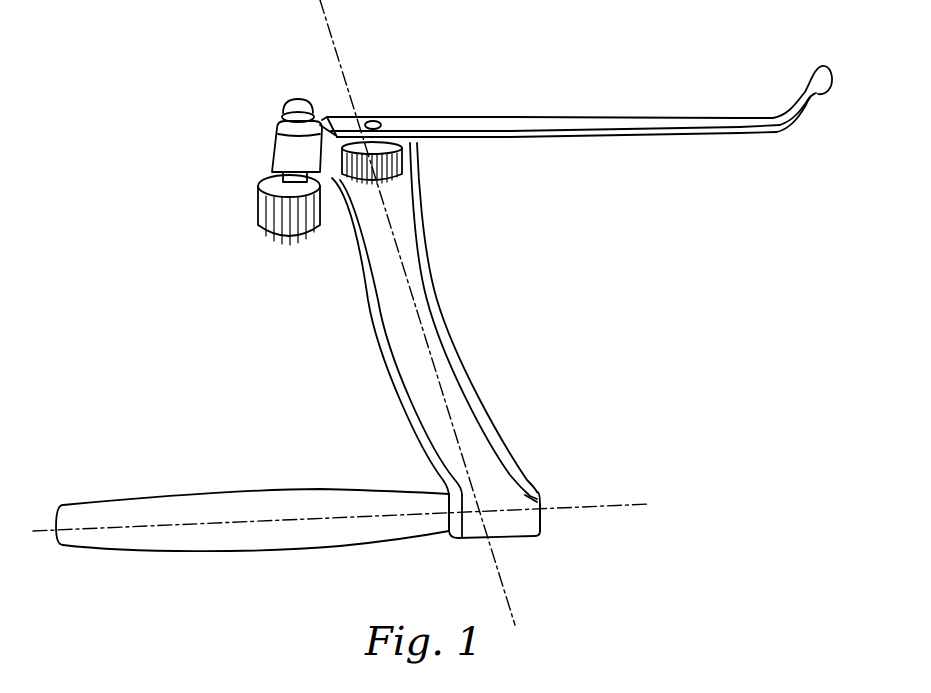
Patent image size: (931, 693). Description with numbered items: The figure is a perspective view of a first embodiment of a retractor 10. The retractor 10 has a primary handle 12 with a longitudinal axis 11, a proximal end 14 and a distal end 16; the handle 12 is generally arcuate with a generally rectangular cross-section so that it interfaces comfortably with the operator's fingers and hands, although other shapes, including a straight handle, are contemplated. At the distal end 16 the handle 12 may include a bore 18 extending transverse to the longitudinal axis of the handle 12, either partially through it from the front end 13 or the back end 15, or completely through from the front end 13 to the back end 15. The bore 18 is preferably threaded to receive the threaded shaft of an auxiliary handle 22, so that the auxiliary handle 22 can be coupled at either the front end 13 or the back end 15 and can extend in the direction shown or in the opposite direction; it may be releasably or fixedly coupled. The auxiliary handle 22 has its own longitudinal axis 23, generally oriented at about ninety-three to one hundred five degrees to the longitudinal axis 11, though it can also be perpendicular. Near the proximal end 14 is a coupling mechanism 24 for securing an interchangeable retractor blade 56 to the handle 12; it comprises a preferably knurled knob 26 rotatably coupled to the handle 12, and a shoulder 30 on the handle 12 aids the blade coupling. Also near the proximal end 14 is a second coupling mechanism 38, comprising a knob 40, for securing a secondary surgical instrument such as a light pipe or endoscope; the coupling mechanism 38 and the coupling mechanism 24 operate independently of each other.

The retractor 10 is at (118, 92).
The longitudinal axis 11 is at (498, 580).
The primary handle 12 is at (441, 321).
The front end 13 is at (516, 536).
The proximal end 14 is at (554, 100).
The back end 15 is at (445, 538).
The distal end 16 is at (527, 478).
The bore 18 is at (545, 509).
The auxiliary handle 22 is at (341, 532).
The longitudinal axis 23 is at (50, 530).
The coupling mechanism 24 is at (373, 102).
The knob 26 is at (397, 147).
The shoulder 30 is at (327, 118).
The coupling mechanism 38 is at (283, 95).
The knob 40 is at (275, 236).
The interchangeable retractor blade 56 is at (688, 95).